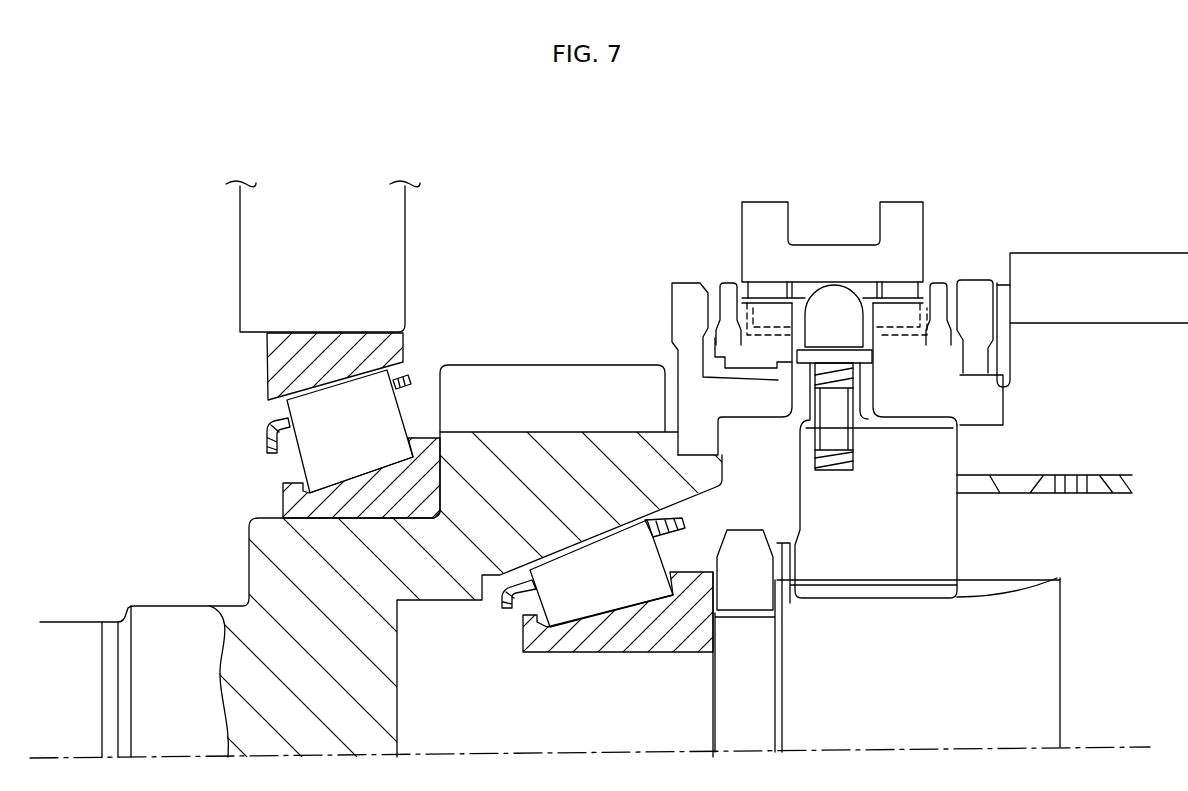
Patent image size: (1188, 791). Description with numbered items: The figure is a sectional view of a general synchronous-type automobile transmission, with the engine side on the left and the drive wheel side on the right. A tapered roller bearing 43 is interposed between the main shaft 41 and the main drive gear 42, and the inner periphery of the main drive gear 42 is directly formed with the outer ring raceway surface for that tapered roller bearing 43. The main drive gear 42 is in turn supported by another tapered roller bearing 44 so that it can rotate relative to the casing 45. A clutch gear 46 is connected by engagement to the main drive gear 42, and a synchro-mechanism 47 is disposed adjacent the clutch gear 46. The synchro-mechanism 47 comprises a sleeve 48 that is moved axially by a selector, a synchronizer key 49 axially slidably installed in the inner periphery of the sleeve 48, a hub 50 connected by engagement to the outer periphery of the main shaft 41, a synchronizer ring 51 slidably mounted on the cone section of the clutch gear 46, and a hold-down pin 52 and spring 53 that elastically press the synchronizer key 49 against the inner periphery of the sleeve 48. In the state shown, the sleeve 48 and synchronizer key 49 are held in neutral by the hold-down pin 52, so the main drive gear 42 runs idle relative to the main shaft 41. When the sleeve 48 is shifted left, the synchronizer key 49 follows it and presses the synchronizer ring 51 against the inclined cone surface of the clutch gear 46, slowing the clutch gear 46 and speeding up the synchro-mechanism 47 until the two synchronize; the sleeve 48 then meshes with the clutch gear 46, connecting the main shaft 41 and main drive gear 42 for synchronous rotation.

The main shaft 41 is at (1042, 670).
The main drive gear 42 is at (513, 447).
The tapered roller bearing 43 is at (492, 624).
The tapered roller bearing 44 is at (250, 458).
The casing 45 is at (385, 238).
The clutch gear 46 is at (684, 322).
The synchro-mechanism 47 is at (957, 231).
The sleeve 48 is at (900, 212).
The synchronizer key 49 is at (907, 315).
The hub 50 is at (940, 532).
The synchronizer ring 51 is at (732, 312).
The hold-down pin 52 is at (840, 330).
The spring 53 is at (835, 378).